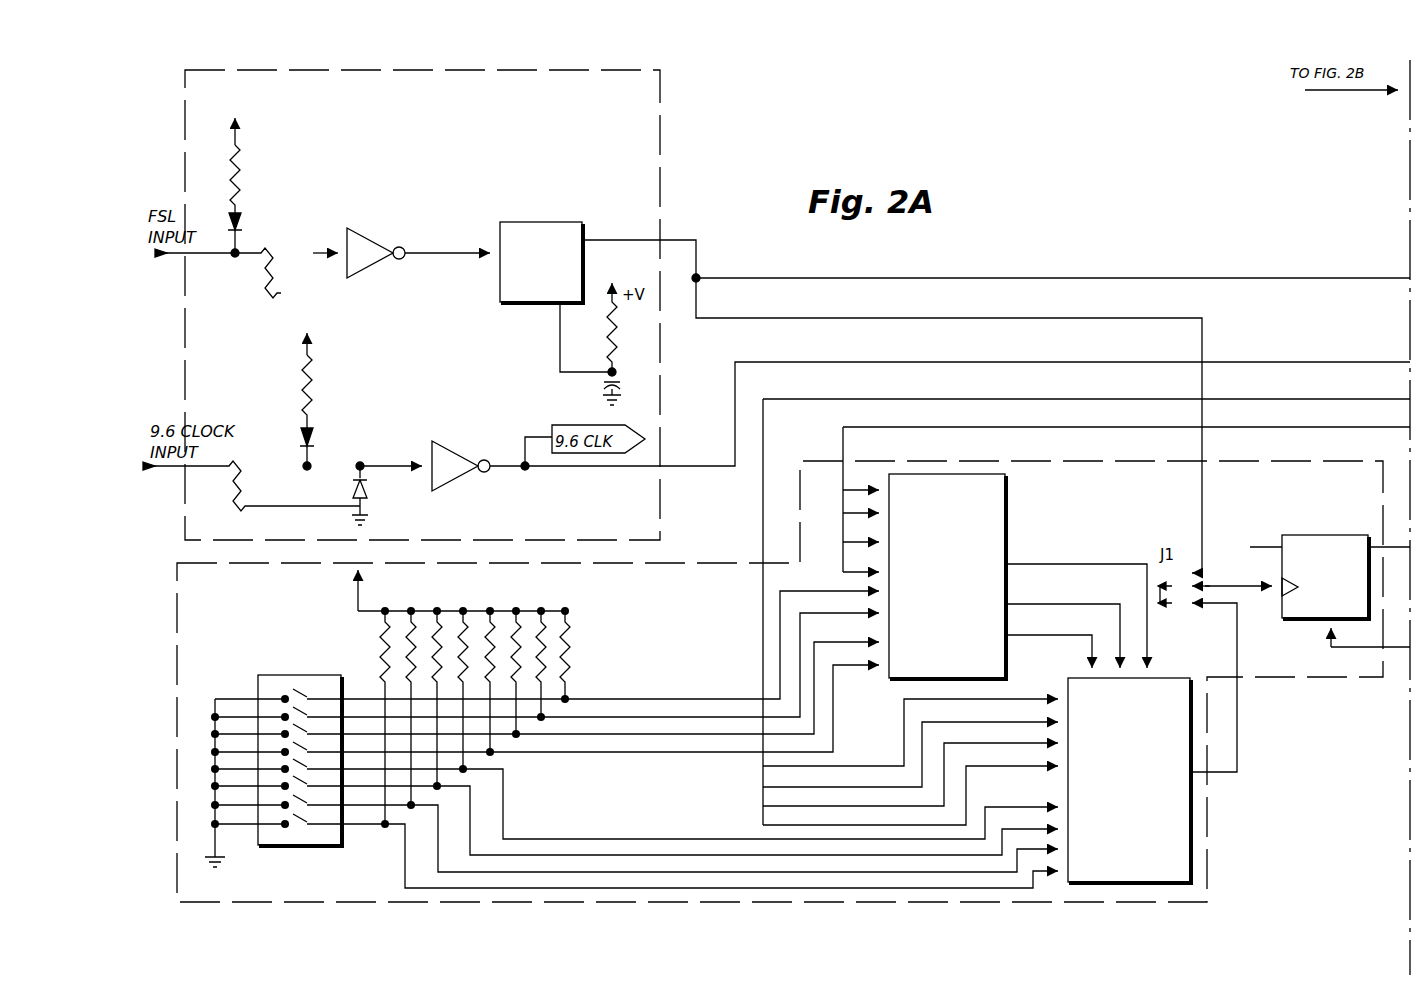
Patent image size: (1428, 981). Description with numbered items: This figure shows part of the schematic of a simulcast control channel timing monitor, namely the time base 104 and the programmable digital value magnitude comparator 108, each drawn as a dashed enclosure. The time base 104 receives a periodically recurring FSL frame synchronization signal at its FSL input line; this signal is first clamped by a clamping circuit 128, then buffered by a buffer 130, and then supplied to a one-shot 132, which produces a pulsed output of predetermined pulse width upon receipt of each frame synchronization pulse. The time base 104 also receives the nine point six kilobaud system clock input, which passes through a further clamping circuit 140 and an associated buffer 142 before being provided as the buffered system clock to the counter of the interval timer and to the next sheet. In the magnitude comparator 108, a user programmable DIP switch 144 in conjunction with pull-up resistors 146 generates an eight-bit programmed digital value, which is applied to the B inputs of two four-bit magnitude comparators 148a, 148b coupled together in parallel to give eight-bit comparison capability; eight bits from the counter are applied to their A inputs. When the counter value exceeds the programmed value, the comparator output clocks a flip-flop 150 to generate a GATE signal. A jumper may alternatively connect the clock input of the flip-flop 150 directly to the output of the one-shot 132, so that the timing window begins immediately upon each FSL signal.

The time base 104 is at (660, 100).
The programmable digital value magnitude comparator 108 is at (177, 626).
The clamping circuit 128 is at (260, 205).
The buffer 130 is at (395, 240).
The one-shot 132 is at (538, 220).
The clamping circuit 140 is at (330, 413).
The buffer 142 is at (452, 435).
The DIP switch 144 is at (290, 668).
The pull-up resistors 146 is at (580, 624).
The four-bit magnitude comparator 148a is at (1006, 516).
The four-bit magnitude comparator 148b is at (1175, 668).
The flip-flop 150 is at (1340, 535).